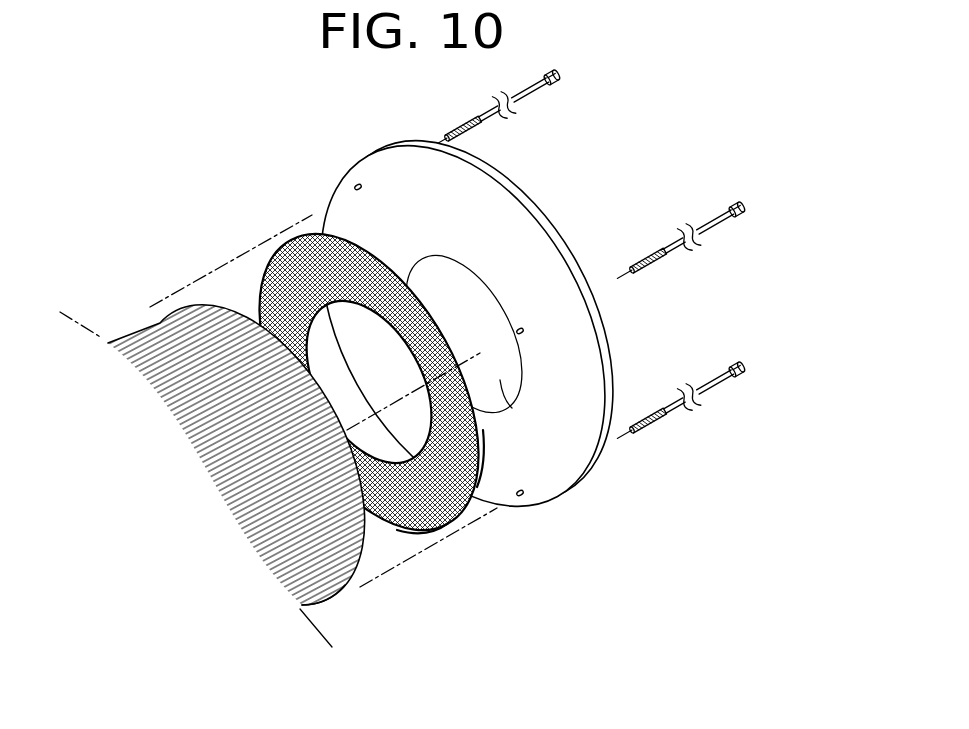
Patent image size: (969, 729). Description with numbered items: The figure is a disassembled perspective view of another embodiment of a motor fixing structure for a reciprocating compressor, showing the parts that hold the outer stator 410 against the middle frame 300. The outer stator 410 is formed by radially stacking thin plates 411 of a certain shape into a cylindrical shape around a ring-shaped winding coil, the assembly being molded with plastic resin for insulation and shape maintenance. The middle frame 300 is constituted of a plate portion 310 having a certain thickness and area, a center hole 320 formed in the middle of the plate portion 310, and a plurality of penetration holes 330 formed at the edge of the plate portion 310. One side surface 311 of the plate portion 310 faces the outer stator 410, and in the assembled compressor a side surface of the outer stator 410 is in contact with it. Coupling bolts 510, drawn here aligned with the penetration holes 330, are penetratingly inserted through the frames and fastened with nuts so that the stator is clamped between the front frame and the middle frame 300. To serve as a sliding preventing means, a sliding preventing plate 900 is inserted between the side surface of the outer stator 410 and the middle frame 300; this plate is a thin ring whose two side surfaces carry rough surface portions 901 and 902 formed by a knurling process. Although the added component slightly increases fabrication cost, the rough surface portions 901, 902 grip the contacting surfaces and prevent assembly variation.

The middle frame 300 is at (548, 222).
The plate portion 310 is at (600, 346).
The side surface of the middle frame plate portion 311 is at (382, 172).
The center hole 320 is at (512, 408).
The penetration holes 330 is at (356, 186).
The outer stator 410 is at (156, 333).
The thin plates 411 is at (313, 548).
The coupling bolts 510 is at (744, 365).
The sliding preventing plate 900 is at (277, 238).
The rough surface portion 901 is at (450, 530).
The rough surface portion 902 is at (494, 468).